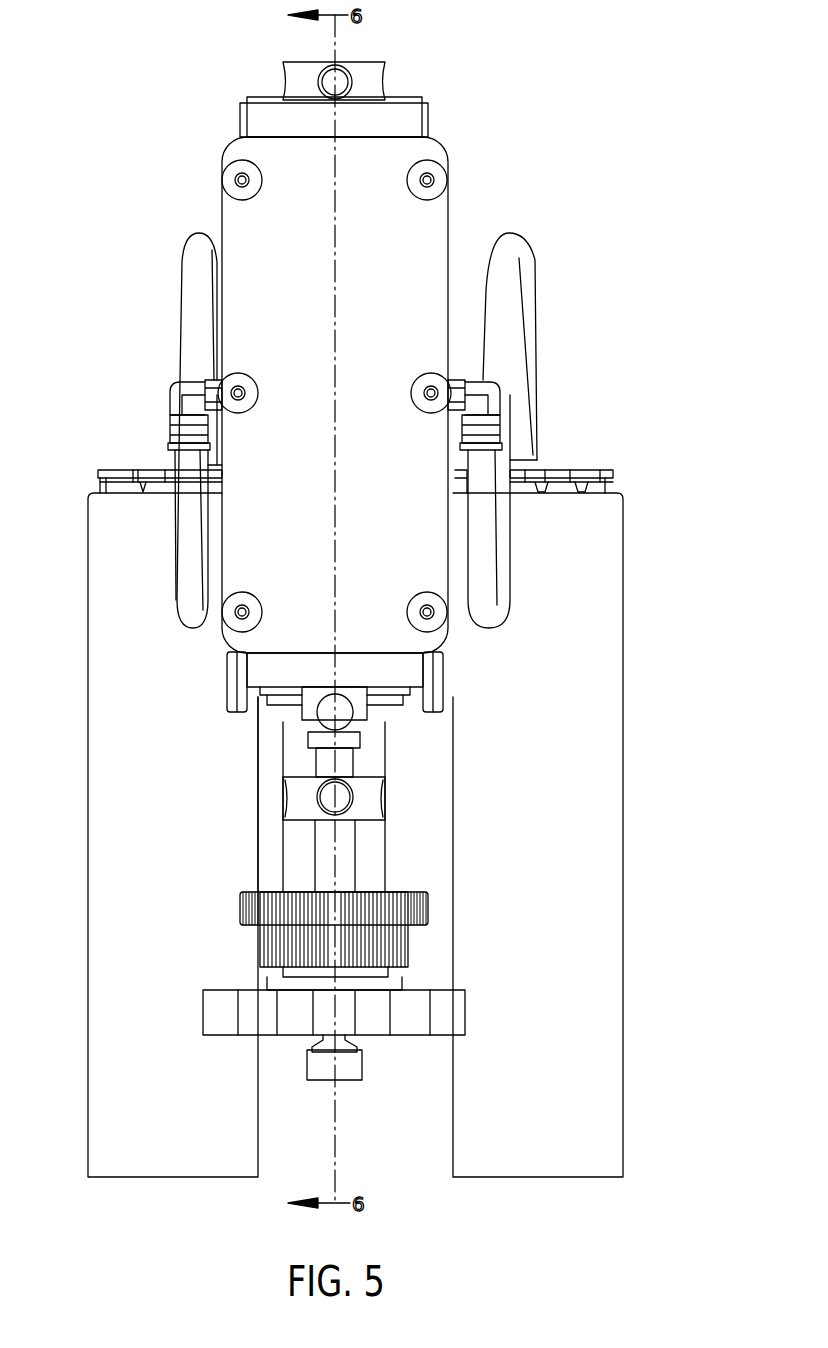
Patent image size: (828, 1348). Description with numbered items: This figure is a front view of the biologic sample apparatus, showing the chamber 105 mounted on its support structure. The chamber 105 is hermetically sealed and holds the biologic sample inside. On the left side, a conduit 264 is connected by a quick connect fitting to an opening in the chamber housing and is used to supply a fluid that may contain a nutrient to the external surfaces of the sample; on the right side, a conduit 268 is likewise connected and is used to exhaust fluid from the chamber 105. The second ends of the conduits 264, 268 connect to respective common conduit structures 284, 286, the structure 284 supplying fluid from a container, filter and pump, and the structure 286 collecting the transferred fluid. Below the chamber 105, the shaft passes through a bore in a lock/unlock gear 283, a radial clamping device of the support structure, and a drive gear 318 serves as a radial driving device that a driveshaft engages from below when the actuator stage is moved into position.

The chamber 105 is at (390, 217).
The conduit 264 is at (190, 305).
The conduit 268 is at (525, 337).
The lock/unlock gear 283 is at (393, 942).
The common conduit structure 284 is at (188, 843).
The common conduit structure 286 is at (555, 843).
The drive gear 318 is at (240, 905).